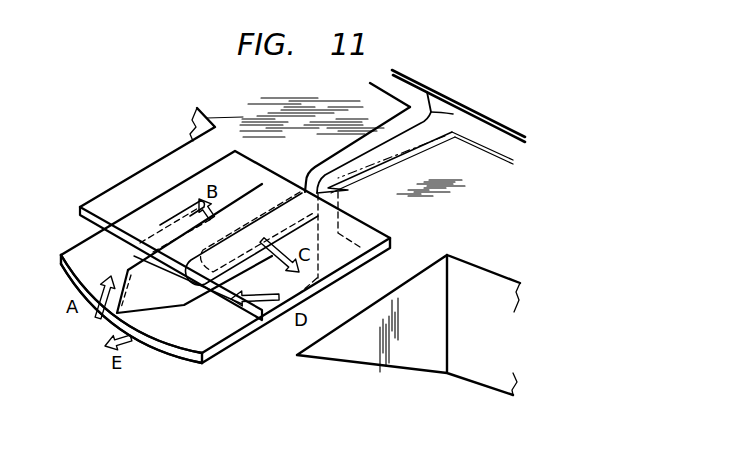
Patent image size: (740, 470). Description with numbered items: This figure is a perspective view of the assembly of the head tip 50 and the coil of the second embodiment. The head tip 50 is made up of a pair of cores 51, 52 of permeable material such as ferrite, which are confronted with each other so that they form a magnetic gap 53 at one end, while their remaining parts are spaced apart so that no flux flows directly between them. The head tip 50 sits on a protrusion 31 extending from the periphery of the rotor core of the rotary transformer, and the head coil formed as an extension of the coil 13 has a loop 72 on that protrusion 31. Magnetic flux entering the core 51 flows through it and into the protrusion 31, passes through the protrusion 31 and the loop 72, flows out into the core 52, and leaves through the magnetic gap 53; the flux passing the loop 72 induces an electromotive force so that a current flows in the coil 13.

The coil 13 is at (484, 125).
The protrusion 31 is at (348, 353).
The head tip 50 is at (150, 357).
The core 51 is at (80, 250).
The core 52 is at (210, 333).
The magnetic gap 53 is at (99, 338).
The loop 72 is at (370, 227).